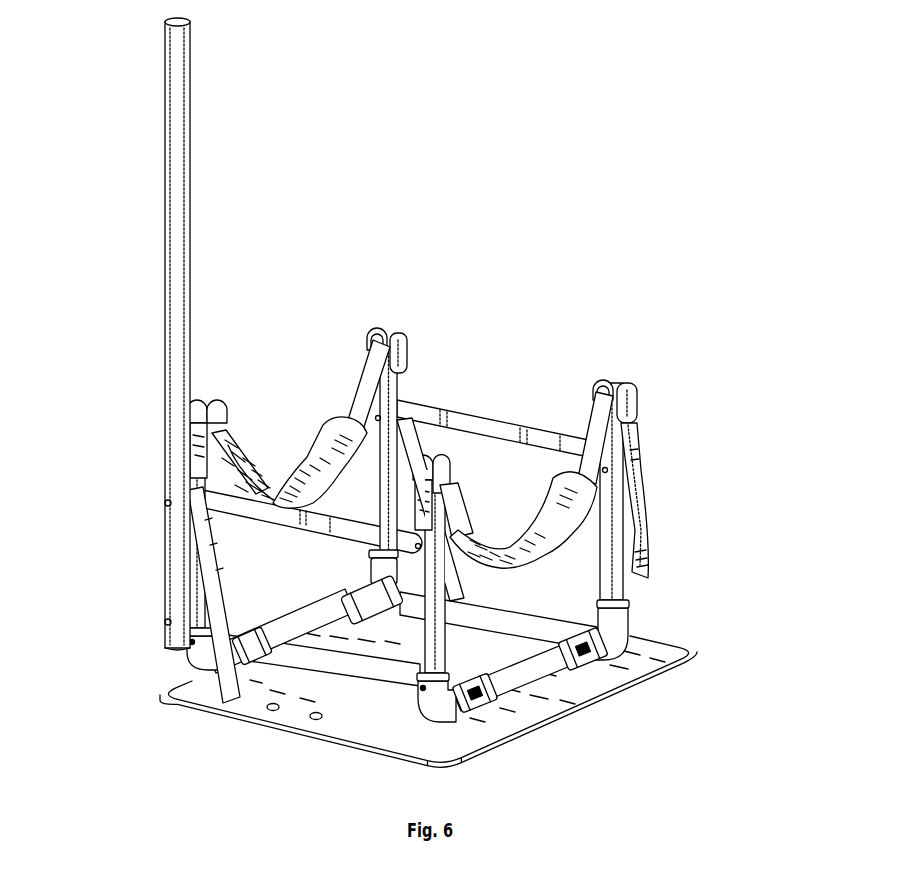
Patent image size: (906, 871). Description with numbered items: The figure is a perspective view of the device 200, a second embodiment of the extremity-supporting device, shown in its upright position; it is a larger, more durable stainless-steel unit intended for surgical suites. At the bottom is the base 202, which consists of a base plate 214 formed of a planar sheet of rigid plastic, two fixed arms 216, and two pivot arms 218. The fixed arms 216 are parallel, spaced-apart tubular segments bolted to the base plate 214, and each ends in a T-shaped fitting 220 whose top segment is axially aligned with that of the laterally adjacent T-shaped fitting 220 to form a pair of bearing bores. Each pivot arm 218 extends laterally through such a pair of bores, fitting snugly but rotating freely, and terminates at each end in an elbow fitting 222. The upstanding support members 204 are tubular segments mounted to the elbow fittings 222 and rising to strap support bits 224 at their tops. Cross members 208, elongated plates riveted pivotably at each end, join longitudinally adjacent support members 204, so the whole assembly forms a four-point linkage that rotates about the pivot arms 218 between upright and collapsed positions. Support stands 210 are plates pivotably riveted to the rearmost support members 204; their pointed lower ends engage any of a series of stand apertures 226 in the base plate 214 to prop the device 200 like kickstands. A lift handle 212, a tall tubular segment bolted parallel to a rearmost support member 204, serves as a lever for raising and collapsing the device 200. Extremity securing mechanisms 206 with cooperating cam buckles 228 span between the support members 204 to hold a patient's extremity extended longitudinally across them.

The device 200 is at (607, 220).
The base 202 is at (705, 658).
The upstanding support members 204 is at (387, 400).
The extremity securing mechanisms 206 is at (303, 453).
The cross members 208 is at (447, 465).
The support stands 210 is at (413, 440).
The lift handle 212 is at (177, 214).
The base plate 214 is at (540, 707).
The fixed arms 216 is at (370, 670).
The pivot arms 218 is at (307, 618).
The T-shaped fitting 220 is at (363, 592).
The elbow fitting 222 is at (193, 662).
The strap support bits 224 is at (370, 335).
The stand apertures 226 is at (316, 719).
The cam buckles 228 is at (407, 343).